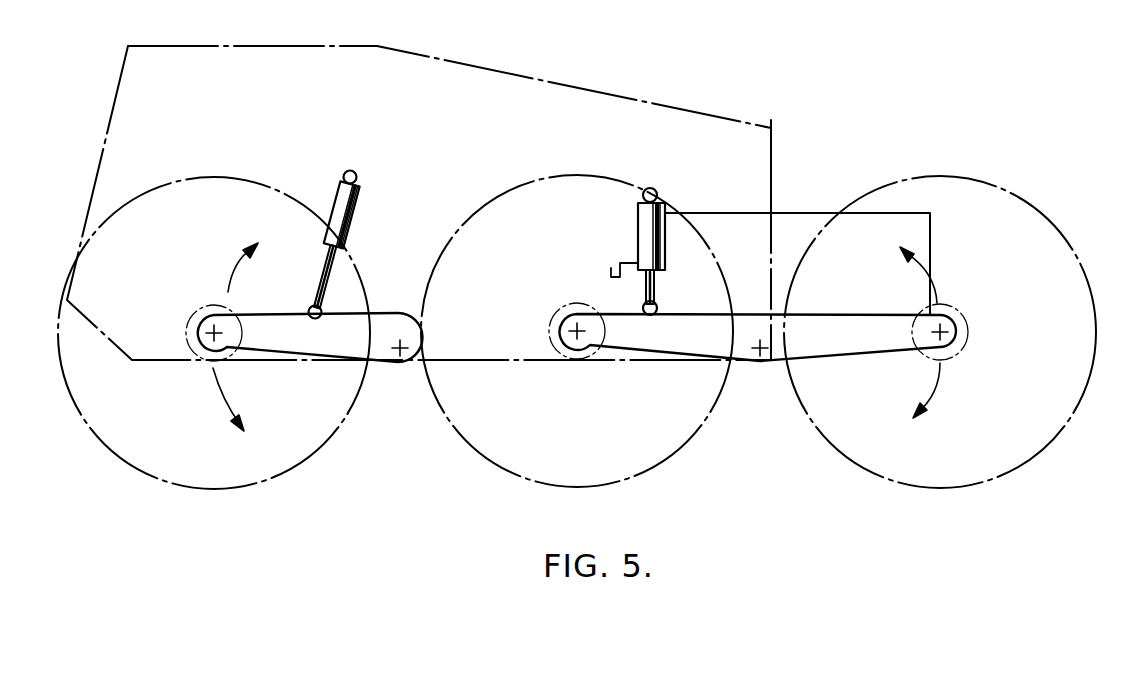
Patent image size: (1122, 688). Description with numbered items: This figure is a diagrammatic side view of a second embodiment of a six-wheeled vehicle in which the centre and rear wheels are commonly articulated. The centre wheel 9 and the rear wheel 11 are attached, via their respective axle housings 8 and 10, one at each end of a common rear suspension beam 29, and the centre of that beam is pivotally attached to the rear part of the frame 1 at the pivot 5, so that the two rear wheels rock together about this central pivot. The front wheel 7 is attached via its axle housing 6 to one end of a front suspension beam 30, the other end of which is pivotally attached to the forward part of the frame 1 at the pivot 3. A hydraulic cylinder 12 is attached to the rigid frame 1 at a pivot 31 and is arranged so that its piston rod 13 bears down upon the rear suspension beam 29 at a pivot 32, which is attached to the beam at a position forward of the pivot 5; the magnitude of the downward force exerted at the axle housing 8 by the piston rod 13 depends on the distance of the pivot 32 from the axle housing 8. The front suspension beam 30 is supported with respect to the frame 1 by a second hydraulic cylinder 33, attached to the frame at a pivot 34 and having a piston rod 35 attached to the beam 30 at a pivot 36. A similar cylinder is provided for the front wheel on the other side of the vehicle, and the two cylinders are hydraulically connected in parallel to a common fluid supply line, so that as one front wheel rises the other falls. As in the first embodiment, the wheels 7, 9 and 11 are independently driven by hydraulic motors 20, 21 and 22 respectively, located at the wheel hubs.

The frame 1 is at (750, 137).
The pivot 3 is at (405, 363).
The pivot 5 is at (758, 354).
The axle housing 6 is at (207, 340).
The front wheel 7 is at (190, 473).
The axle housing 8 is at (570, 343).
The centre wheel 9 is at (533, 468).
The axle housing 10 is at (933, 340).
The rear wheel 11 is at (913, 473).
The hydraulic cylinder 12 is at (665, 242).
The piston rod 13 is at (670, 282).
The hydraulic motor 20 is at (210, 360).
The hydraulic motor 21 is at (580, 357).
The hydraulic motor 22 is at (957, 347).
The rear suspension beam 29 is at (697, 343).
The front suspension beam 30 is at (327, 352).
The pivot 31 is at (660, 193).
The pivot 32 is at (657, 306).
The hydraulic cylinder 33 is at (357, 200).
The pivot 34 is at (357, 175).
The piston rod 35 is at (333, 265).
The pivot 36 is at (322, 311).